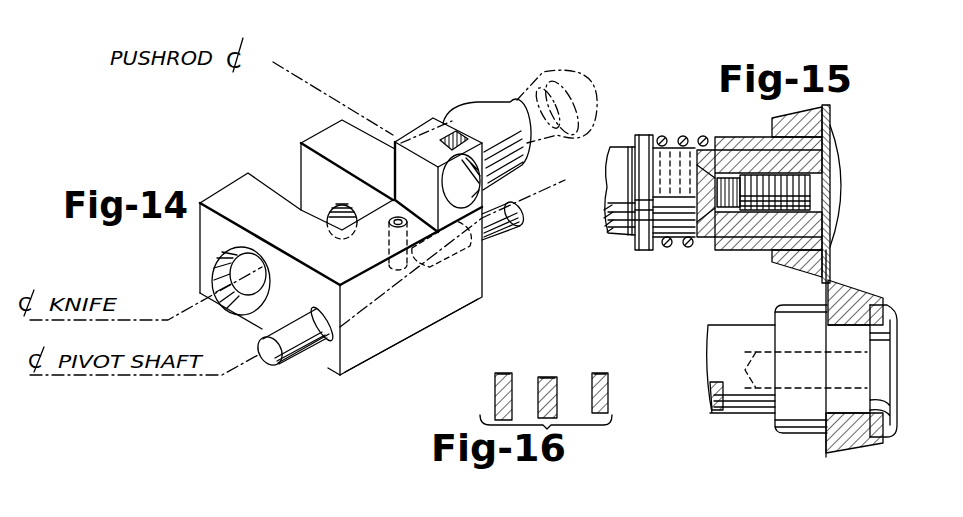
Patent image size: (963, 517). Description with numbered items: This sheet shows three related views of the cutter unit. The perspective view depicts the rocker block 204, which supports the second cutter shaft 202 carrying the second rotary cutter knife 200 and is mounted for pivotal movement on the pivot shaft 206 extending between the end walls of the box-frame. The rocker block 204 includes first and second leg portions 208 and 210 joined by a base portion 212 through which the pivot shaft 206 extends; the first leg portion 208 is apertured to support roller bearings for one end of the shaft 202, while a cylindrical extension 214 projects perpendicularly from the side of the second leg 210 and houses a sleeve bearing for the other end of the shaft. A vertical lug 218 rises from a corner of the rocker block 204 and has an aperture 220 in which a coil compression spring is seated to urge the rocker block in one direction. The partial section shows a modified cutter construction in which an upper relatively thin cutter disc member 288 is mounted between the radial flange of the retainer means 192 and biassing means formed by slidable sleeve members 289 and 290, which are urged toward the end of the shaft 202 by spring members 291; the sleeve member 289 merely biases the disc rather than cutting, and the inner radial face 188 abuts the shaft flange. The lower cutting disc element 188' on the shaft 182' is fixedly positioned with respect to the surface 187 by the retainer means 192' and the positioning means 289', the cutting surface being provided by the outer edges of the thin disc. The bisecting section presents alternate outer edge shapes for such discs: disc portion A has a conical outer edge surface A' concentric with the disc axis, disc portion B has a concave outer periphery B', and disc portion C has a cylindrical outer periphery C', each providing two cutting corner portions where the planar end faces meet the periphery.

In FIG. 14, the second rotary cutter knife 200 is at (553, 63).
In FIG. 14, the rocker block 204 is at (267, 166).
In FIG. 14, the pivot shaft 206 is at (292, 357).
In FIG. 14, the first leg portion 208 is at (205, 245).
In FIG. 14, the second leg portion 210 is at (337, 127).
In FIG. 14, the base portion 212 is at (408, 325).
In FIG. 14, the cylindrical extension 214 is at (483, 113).
In FIG. 14, the vertical lug 218 is at (402, 170).
In FIG. 14, the aperture 220 is at (466, 182).
In FIG. 15, the second cutter shaft 202 is at (614, 240).
In FIG. 15, the spring members 291 is at (692, 137).
In FIG. 15, the slidable sleeve member 290 is at (759, 178).
In FIG. 15, the inner radial face 188 is at (763, 192).
In FIG. 15, the slidable sleeve member 289 is at (777, 185).
In FIG. 15, the cutter disc member 288 is at (833, 123).
In FIG. 15, the retainer means 192 is at (865, 186).
In FIG. 15, the shaft 182' is at (774, 350).
In FIG. 15, the surface 187 is at (826, 341).
In FIG. 15, the cutter disc element 188' is at (789, 353).
In FIG. 15, the positioning means 289' is at (864, 288).
In FIG. 15, the retainer means 192' is at (866, 386).
In FIG. 16, the disc portion A is at (483, 396).
In FIG. 16, the conical outer edge surface A' is at (511, 354).
In FIG. 16, the disc portion B is at (563, 392).
In FIG. 16, the concave outer periphery B' is at (562, 356).
In FIG. 16, the disc portion C is at (618, 393).
In FIG. 16, the cylindrical outer periphery C' is at (616, 354).